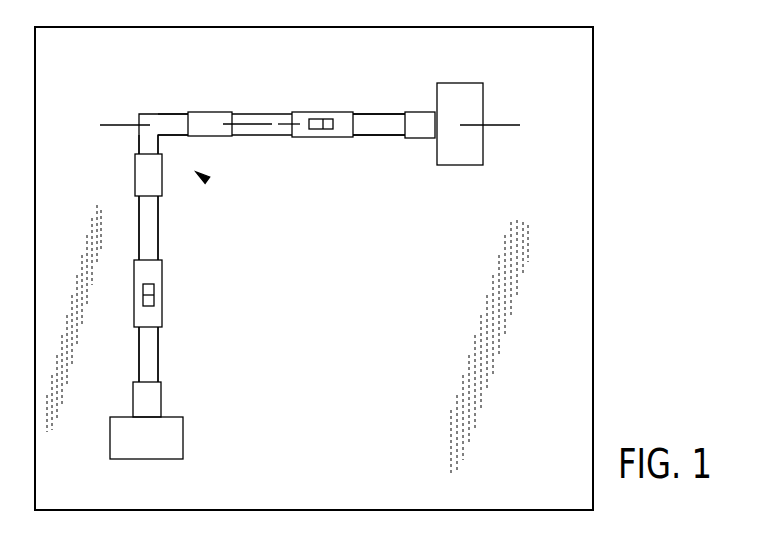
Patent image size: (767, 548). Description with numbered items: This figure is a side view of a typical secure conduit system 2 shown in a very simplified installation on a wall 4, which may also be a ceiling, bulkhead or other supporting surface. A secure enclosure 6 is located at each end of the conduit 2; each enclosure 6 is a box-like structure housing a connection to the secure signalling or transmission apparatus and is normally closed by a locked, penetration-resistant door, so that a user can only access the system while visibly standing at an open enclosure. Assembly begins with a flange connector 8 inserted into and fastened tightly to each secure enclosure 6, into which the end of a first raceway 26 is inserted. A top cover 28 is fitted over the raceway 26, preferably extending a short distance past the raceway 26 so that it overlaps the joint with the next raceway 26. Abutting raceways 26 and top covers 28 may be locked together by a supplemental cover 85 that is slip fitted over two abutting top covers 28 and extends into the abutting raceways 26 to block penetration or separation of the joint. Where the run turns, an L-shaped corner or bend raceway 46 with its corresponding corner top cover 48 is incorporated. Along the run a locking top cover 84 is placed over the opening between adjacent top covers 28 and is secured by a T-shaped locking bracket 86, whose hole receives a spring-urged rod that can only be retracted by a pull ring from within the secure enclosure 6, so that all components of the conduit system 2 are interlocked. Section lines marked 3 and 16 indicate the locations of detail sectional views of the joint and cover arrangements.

The secure conduit system 2 is at (207, 180).
The section line 3 is at (285, 127).
The wall 4 is at (355, 335).
The secure enclosure 6 is at (477, 145).
The flange connector 8 is at (423, 138).
The section line 16 is at (104, 127).
The raceway 26 is at (380, 137).
The top cover 28 is at (367, 120).
The L-shaped corner or bend raceway 46 is at (171, 113).
The corner top cover 48 is at (136, 138).
The locking top cover 84 is at (332, 138).
The supplemental cover 85 is at (212, 137).
The T-shaped locking bracket 86 is at (326, 117).